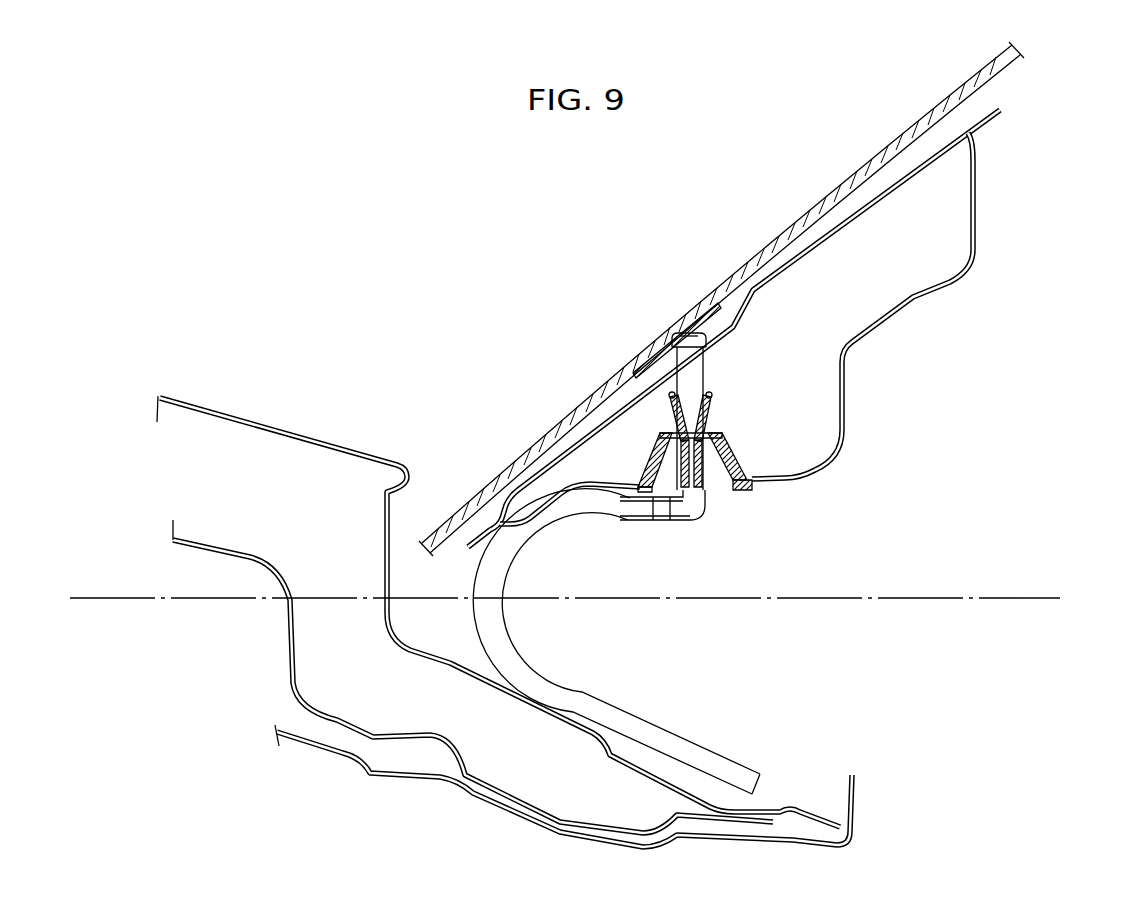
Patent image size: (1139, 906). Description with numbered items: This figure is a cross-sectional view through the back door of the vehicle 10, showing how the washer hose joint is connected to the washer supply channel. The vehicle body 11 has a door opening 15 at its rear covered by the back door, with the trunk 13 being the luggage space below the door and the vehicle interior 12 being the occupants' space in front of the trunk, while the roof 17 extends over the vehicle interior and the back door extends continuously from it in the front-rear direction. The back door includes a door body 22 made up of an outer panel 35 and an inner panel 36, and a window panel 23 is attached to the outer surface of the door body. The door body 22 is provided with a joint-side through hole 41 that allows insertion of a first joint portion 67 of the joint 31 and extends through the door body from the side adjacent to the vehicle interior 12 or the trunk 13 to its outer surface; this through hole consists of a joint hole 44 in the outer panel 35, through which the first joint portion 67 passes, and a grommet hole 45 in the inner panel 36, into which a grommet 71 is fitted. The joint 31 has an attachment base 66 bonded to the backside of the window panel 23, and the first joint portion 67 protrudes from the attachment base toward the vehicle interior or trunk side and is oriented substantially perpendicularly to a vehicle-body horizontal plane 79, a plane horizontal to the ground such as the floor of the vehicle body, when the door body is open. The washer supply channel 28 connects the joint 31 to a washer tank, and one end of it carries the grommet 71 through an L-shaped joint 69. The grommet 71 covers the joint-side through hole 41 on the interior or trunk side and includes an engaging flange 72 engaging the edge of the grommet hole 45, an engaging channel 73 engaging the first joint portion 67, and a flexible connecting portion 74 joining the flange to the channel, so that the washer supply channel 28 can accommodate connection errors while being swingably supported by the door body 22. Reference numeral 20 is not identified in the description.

The vehicle 10 is at (338, 184).
The vehicle body 11 is at (298, 296).
The vehicle interior 12 is at (172, 717).
The trunk 13 is at (963, 717).
The door opening 15 is at (797, 810).
The roof 17 is at (207, 407).
The drain structure 20 is at (458, 348).
The door body 22 is at (734, 306).
The window panel 23 is at (906, 130).
The washer supply channel 28 is at (605, 708).
The joint 31 is at (686, 335).
The outer panel 35 is at (820, 232).
The inner panel 36 is at (910, 295).
The joint-side through hole 41 is at (586, 419).
The joint hole 44 is at (640, 408).
The grommet hole 45 is at (657, 467).
The attachment base 66 is at (644, 370).
The first joint portion 67 is at (692, 373).
The L-shaped joint 69 is at (700, 515).
The grommet 71 is at (729, 461).
The engaging flange 72 is at (752, 490).
The engaging channel 73 is at (708, 403).
The connecting portion 74 is at (736, 446).
The vehicle-body horizontal plane 79 is at (1008, 598).